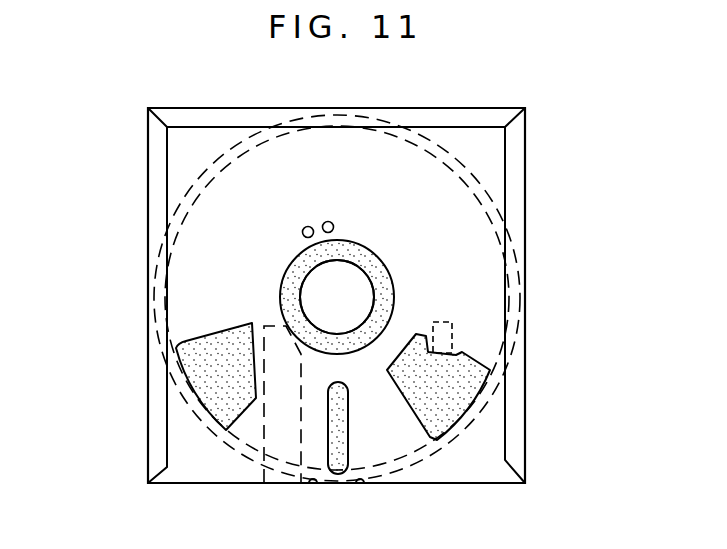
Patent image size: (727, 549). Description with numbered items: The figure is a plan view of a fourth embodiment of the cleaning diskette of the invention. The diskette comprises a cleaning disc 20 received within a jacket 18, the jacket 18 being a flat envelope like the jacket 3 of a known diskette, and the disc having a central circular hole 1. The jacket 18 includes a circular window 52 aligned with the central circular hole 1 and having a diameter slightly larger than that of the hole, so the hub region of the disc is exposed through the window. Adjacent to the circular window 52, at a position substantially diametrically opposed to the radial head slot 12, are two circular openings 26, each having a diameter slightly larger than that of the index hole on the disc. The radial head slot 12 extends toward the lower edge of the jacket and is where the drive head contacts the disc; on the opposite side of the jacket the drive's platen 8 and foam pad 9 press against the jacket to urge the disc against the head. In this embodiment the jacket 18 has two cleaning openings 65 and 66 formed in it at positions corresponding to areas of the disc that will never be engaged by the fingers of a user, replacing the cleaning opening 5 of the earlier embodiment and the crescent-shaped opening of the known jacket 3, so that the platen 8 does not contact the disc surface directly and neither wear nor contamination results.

The central circular hole 1 is at (366, 283).
The jacket 3 is at (148, 180).
The cleaning opening 5 is at (470, 172).
The platen 8 is at (262, 430).
The foam pad 9 is at (455, 338).
The radial head slot 12 is at (348, 443).
The jacket 18 is at (148, 258).
The cleaning disc 20 is at (483, 190).
The circular openings 26 is at (328, 221).
The circular window 52 is at (394, 296).
The cleaning opening 65 is at (185, 372).
The cleaning opening 66 is at (445, 405).